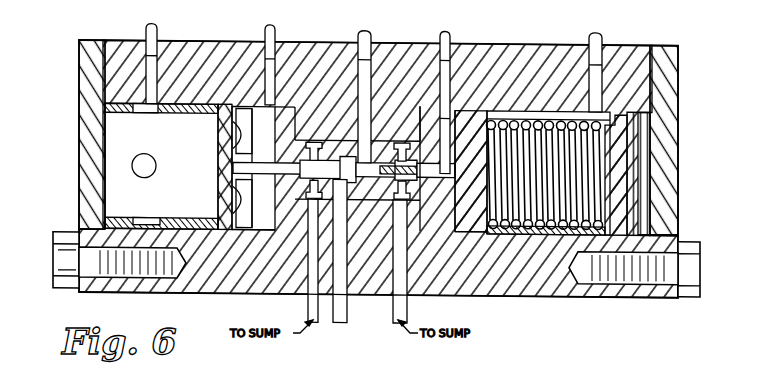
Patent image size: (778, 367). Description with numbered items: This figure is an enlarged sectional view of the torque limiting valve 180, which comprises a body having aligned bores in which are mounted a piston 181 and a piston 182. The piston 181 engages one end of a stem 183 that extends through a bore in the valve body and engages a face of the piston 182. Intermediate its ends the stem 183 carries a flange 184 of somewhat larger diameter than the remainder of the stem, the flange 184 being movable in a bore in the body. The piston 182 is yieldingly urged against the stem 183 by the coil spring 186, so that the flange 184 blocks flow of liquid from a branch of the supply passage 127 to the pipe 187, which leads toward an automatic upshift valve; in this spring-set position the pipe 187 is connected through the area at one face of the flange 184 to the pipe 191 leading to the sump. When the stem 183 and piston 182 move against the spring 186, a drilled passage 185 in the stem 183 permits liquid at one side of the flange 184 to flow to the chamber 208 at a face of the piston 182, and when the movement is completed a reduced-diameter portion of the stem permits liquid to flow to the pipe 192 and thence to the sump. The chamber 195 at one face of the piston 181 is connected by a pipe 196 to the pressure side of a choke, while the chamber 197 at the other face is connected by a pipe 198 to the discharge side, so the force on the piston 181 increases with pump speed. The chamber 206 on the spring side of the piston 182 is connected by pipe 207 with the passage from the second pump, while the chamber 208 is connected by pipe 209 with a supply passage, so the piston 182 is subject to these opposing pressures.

The supply passage 127 is at (360, 31).
The torque limiting valve 180 is at (170, 294).
The piston 181 is at (233, 200).
The piston 182 is at (480, 107).
The stem 183 is at (248, 158).
The flange 184 is at (347, 154).
The drilled passage 185 is at (406, 156).
The coil spring 186 is at (557, 118).
The pipe 187 is at (344, 298).
The pipe 191 is at (308, 300).
The pipe 192 is at (407, 299).
The chamber 195 is at (108, 106).
The pipe 196 is at (148, 27).
The chamber 197 is at (255, 228).
The pipe 198 is at (267, 28).
The chamber 206 is at (562, 228).
The pipe 207 is at (600, 30).
The chamber 208 is at (452, 228).
The pipe 209 is at (442, 30).